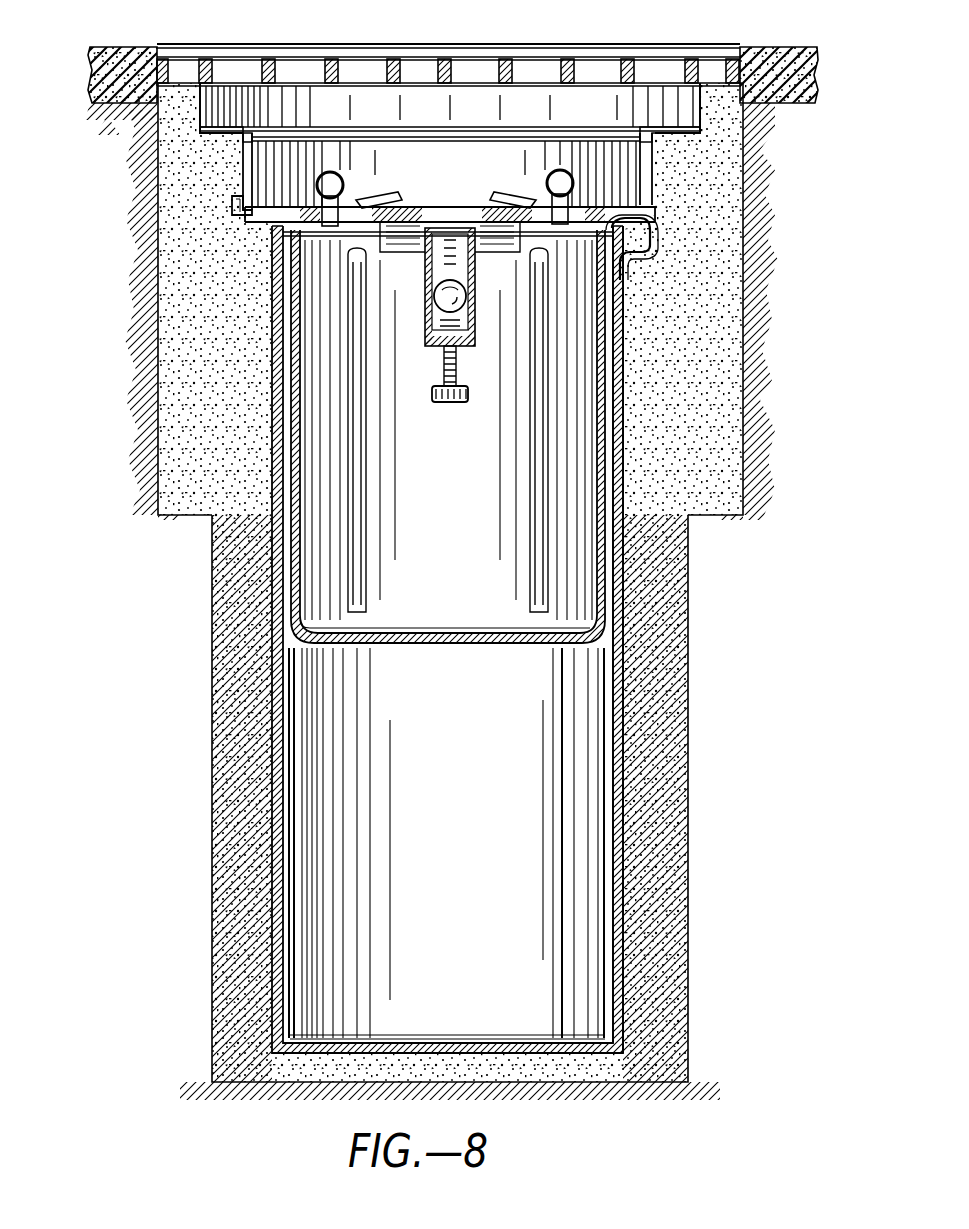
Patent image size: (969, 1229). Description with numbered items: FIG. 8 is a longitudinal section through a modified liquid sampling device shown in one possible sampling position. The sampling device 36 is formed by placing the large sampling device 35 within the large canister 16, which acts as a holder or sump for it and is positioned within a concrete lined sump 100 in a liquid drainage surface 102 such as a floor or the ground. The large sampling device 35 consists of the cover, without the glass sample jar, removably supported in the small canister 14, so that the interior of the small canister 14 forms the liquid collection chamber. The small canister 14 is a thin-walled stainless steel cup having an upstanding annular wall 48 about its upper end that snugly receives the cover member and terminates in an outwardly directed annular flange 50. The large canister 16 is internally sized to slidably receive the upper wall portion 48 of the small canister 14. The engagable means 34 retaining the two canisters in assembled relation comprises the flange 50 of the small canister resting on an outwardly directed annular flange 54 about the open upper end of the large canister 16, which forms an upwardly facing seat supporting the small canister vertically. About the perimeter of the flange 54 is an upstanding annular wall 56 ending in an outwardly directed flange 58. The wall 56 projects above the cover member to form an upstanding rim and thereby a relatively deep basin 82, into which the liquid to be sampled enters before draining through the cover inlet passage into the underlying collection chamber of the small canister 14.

The small canister 14 is at (446, 436).
The large canister 16 is at (524, 639).
The engagable means 34 is at (645, 207).
The large sampling device 35 is at (572, 420).
The sampling device 36 is at (628, 667).
The upstanding annular wall 48 is at (232, 205).
The outwardly directed annular flange 50 is at (640, 237).
The outwardly directed annular flange 54 is at (645, 243).
The upstanding annular wall 56 is at (712, 179).
The outwardly directed flange 58 is at (668, 138).
The basin 82 is at (401, 160).
The concrete lined sump 100 is at (230, 775).
The liquid drainage surface 102 is at (123, 46).